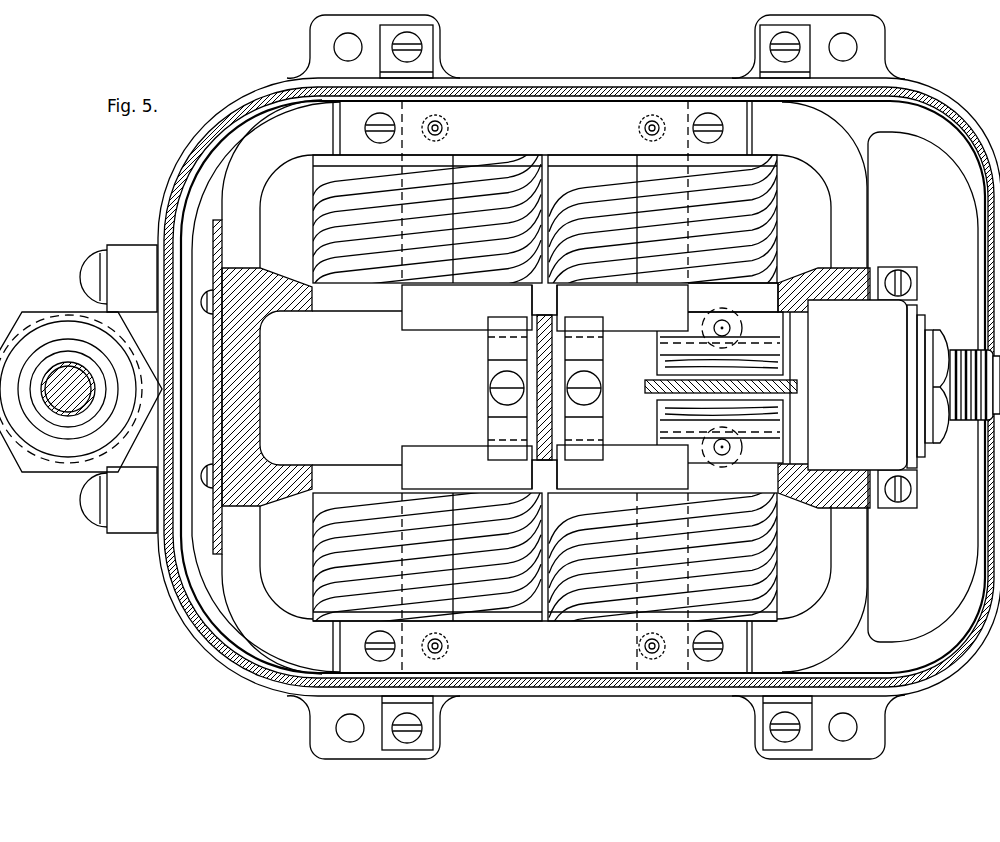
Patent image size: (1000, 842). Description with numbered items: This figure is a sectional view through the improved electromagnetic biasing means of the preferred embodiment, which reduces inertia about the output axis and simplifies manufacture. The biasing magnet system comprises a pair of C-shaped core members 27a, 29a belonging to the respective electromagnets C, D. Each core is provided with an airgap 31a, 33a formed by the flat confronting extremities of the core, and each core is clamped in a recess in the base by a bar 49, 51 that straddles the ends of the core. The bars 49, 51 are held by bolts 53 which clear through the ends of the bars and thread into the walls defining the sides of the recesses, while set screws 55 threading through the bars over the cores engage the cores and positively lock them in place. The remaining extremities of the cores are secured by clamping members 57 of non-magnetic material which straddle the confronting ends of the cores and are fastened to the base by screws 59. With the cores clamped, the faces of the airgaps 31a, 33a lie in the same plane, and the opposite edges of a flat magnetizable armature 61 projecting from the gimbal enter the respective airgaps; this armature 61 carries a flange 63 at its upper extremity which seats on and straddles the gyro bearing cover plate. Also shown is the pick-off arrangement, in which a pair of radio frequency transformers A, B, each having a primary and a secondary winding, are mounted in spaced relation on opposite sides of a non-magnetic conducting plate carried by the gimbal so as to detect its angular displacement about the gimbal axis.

The bar 49 is at (604, 662).
The bar 51 is at (592, 108).
The bolts 53 is at (365, 128).
The set screws 55 is at (448, 127).
The clamping members 57 is at (488, 412).
The screws 59 is at (497, 381).
The armature 61 is at (537, 421).
The flange 63 is at (798, 388).
The C-shaped core member 27a is at (649, 456).
The C-shaped core member 29a is at (614, 322).
The airgap 31a is at (543, 477).
The airgap 33a is at (548, 298).
The radio frequency transformer A is at (785, 409).
The radio frequency transformer B is at (785, 366).
The electromagnet C is at (430, 457).
The electromagnet D is at (434, 320).